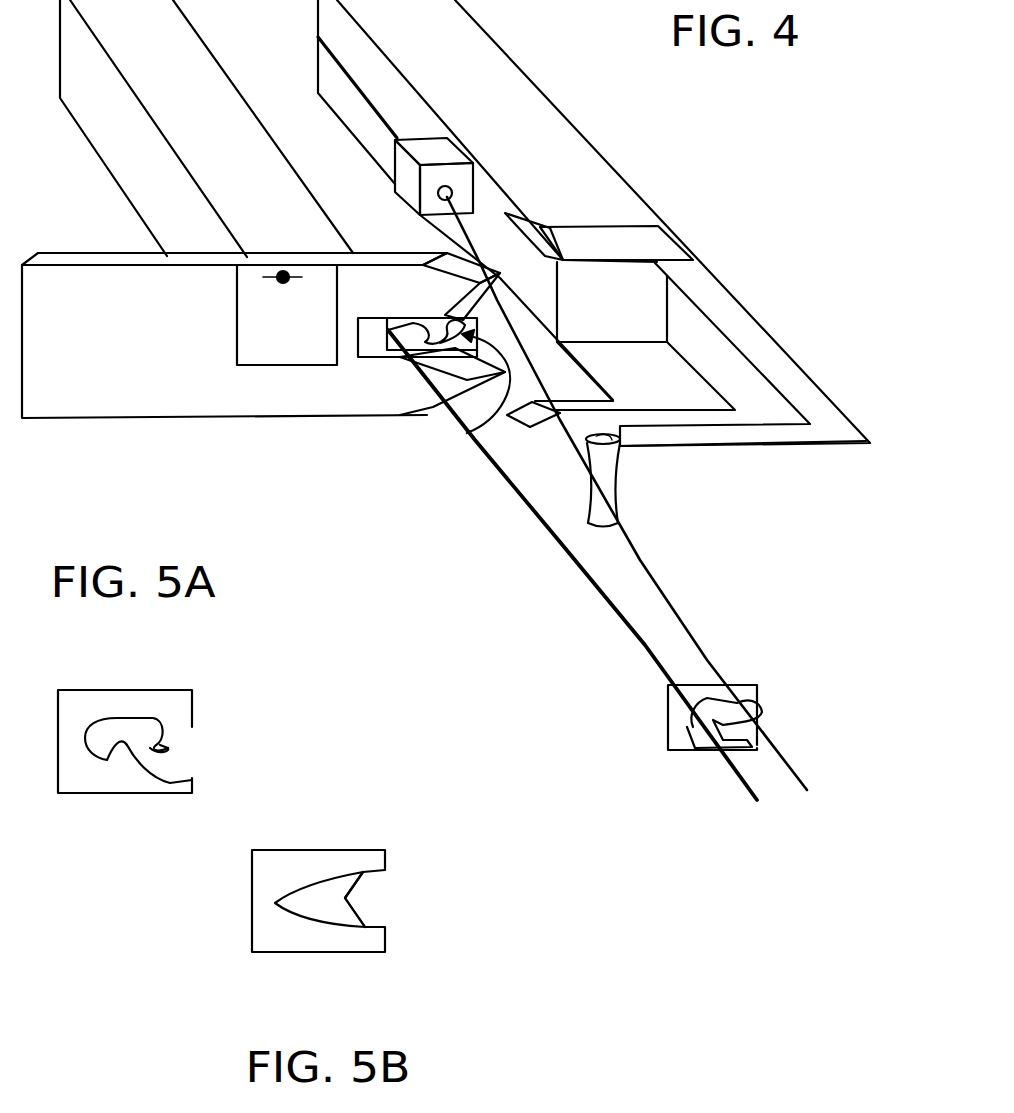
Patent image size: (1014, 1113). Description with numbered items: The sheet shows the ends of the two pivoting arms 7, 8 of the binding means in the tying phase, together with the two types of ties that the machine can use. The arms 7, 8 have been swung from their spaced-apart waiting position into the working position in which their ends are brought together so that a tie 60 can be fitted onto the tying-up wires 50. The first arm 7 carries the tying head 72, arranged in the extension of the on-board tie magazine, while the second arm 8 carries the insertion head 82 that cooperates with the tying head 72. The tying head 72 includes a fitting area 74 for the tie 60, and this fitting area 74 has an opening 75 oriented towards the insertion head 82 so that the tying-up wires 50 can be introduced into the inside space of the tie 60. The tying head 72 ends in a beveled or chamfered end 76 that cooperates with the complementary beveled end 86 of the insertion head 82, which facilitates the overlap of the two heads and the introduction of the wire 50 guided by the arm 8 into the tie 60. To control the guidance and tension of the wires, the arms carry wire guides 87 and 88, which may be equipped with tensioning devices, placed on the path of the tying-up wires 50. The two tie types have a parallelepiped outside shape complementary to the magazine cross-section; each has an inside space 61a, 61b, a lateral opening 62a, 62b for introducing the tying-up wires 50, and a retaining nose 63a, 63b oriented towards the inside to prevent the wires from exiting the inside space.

In FIG. 4, the pivoting arm 7 is at (148, 200).
In FIG. 4, the pivoting arm 8 is at (517, 125).
In FIG. 4, the wire guide 87 is at (425, 146).
In FIG. 4, the beveled end of insertion head 86 is at (547, 230).
In FIG. 4, the insertion head 82 is at (730, 302).
In FIG. 4, the beveled end of tying head 76 is at (445, 257).
In FIG. 4, the tying head 72 is at (105, 362).
In FIG. 4, the fitting area 74 is at (370, 345).
In FIG. 4, the tie 60 is at (407, 337).
In FIG. 5A, the tie 60 is at (102, 797).
In FIG. 5B, the tie 60 is at (250, 925).
In FIG. 4, the opening 75 is at (505, 372).
In FIG. 4, the wire guide 88 is at (607, 472).
In FIG. 4, the tying-up wire 50 is at (640, 560).
In FIG. 5A, the inside space 61a is at (118, 728).
In FIG. 5A, the retaining nose 63a is at (152, 750).
In FIG. 5A, the lateral opening 62a is at (155, 767).
In FIG. 5B, the inside space 61b is at (312, 890).
In FIG. 5B, the retaining nose 63b is at (352, 897).
In FIG. 5B, the lateral opening 62b is at (358, 901).